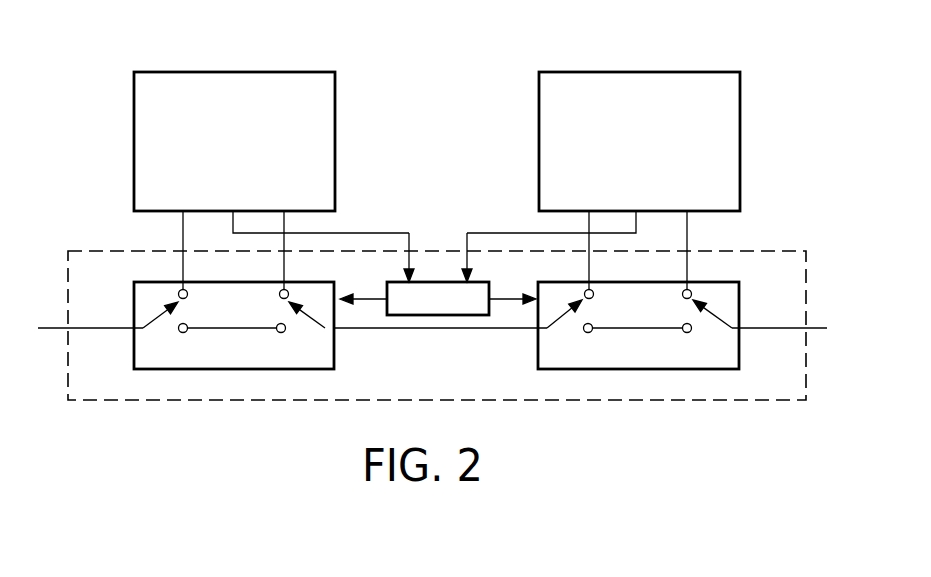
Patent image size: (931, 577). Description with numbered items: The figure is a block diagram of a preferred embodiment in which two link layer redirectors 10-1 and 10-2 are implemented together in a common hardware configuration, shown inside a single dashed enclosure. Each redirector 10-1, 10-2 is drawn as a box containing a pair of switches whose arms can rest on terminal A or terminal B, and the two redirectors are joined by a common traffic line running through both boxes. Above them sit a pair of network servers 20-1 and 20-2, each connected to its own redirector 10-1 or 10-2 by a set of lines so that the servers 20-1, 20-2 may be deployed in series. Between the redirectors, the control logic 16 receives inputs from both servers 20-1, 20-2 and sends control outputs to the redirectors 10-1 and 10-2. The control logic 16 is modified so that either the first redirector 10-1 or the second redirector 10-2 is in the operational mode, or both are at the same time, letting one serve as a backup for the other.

The network server 20-1 is at (246, 72).
The network server 20-2 is at (633, 72).
The redirector 10-1 is at (334, 357).
The redirector 10-2 is at (739, 352).
The control logic 16 is at (436, 315).